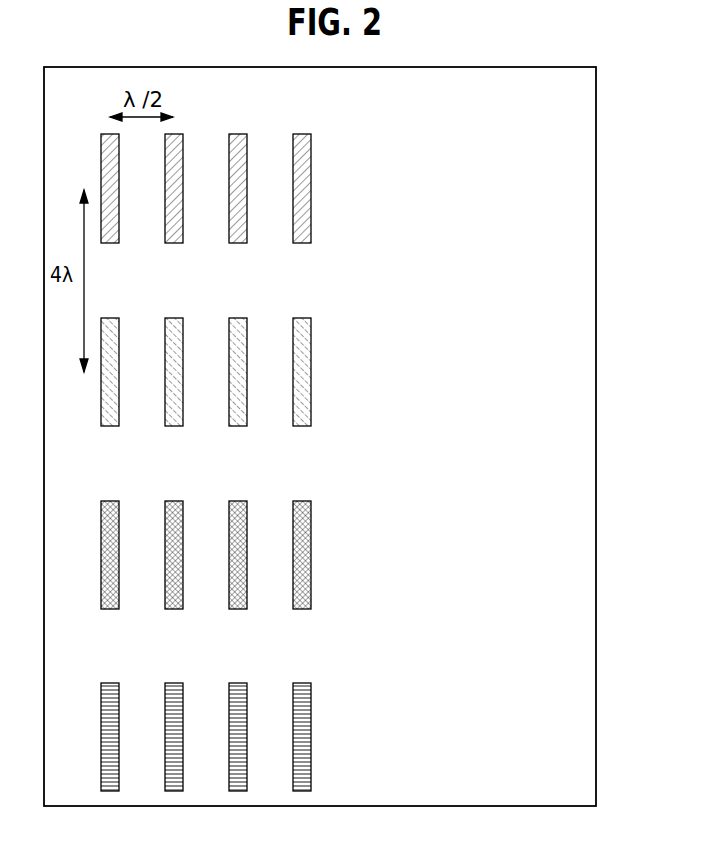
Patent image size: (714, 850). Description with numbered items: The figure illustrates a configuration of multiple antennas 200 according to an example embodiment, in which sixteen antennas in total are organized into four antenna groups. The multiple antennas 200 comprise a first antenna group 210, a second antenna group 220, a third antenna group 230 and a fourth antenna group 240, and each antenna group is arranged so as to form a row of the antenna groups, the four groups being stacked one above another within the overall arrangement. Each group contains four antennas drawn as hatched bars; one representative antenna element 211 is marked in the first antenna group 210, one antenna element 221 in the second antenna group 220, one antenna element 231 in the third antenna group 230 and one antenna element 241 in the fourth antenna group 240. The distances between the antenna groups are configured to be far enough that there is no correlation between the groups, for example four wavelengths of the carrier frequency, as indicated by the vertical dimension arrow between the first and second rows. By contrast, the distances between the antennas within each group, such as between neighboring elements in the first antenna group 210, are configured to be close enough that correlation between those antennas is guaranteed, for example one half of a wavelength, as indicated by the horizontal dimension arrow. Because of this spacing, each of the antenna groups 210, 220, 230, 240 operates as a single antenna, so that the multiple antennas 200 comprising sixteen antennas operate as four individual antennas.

The multiple antennas 200 is at (596, 112).
The antenna group 0 210 is at (375, 156).
The antenna element of antenna group 0 211 is at (240, 132).
The antenna group 1 220 is at (375, 340).
The antenna element of antenna group 1 221 is at (240, 317).
The antenna group 2 230 is at (375, 523).
The antenna element of antenna group 2 231 is at (240, 500).
The antenna group 3 240 is at (345, 706).
The antenna element of antenna group 3 241 is at (240, 682).